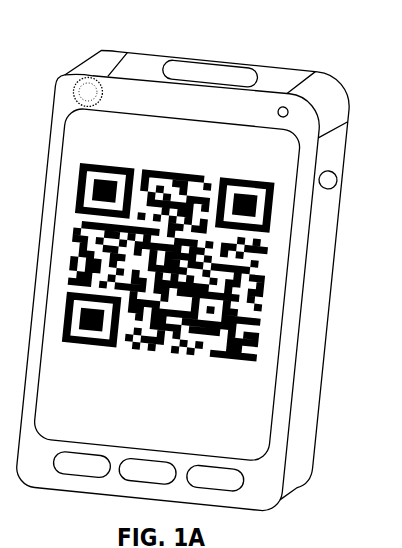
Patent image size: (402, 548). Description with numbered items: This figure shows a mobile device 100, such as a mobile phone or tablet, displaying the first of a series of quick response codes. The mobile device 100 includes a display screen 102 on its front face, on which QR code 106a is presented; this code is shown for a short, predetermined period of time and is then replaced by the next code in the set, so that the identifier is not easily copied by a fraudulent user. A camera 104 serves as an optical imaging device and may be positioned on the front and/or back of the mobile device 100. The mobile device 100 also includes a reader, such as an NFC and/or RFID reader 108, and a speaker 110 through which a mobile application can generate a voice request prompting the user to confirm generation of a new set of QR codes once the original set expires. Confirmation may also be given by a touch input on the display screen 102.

The mobile device 100 is at (297, 67).
The display screen 102 is at (254, 440).
The camera 104 is at (289, 113).
The QR code 106a is at (267, 312).
The NFC and/or RFID reader 108 is at (210, 62).
The speaker 110 is at (63, 78).